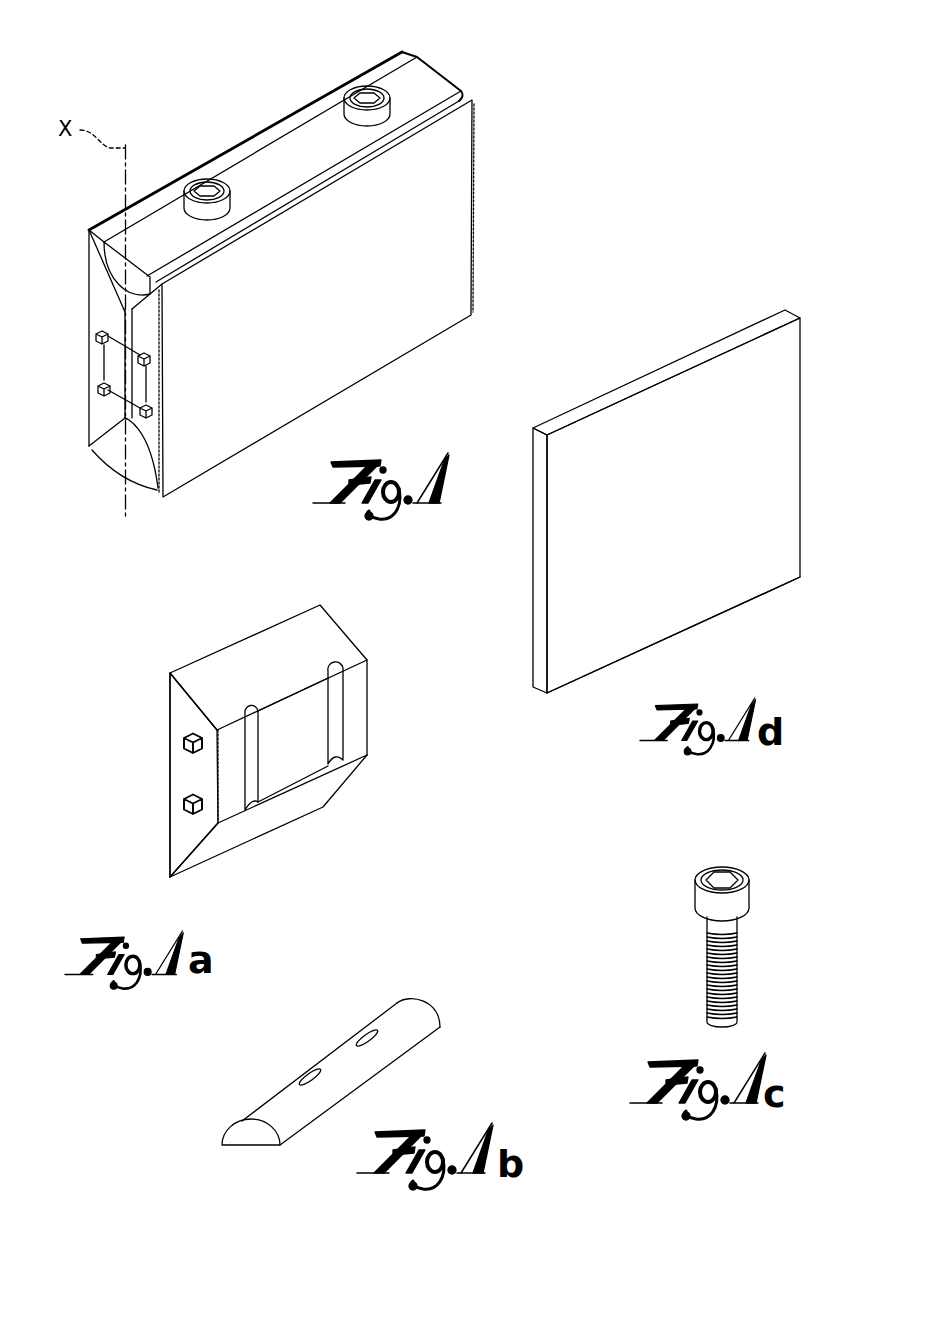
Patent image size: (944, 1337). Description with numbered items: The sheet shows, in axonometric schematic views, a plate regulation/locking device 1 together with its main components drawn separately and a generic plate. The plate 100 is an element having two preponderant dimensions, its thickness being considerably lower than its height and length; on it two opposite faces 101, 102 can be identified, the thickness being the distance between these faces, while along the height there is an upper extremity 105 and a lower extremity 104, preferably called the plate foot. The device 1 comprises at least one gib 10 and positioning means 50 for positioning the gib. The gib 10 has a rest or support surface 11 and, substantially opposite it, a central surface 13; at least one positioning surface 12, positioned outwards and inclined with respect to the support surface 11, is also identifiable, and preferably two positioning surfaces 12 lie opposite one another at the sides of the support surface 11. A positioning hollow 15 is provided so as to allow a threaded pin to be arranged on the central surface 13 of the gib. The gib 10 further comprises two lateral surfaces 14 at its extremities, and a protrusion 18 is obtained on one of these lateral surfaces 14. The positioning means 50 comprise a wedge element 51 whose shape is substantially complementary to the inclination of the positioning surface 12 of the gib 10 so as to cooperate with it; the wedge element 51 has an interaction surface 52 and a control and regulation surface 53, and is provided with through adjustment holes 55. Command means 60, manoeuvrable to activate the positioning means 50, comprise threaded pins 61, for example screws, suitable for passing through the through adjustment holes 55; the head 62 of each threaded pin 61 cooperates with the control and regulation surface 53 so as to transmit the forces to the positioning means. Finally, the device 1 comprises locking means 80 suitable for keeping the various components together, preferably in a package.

In FIG. 1, the plate regulation/locking device 1 is at (342, 289).
In FIG. 1, the gib 10 is at (478, 155).
In FIG. 1A, the gib 10 is at (262, 735).
In FIG. 1A, the rest surface 11 is at (150, 793).
In FIG. 1A, the positioning surface 12 is at (278, 660).
In FIG. 1A, the central surface 13 is at (228, 768).
In FIG. 1A, the lateral surface 14 is at (183, 830).
In FIG. 1A, the positioning hollow 15 is at (350, 720).
In FIG. 1A, the protrusion 18 is at (173, 730).
In FIG. 1, the positioning means 50 is at (446, 63).
In FIG. 1B, the wedge element 51 is at (343, 1076).
In FIG. 1B, the interaction surface 52 is at (343, 1062).
In FIG. 1B, the control and regulation surface 53 is at (260, 1153).
In FIG. 1B, the through adjustment hole 55 is at (305, 1072).
In FIG. 1, the command means 60 is at (223, 175).
In FIG. 1C, the command means 60 is at (713, 924).
In FIG. 1C, the threaded pin 61 is at (757, 888).
In FIG. 1C, the head 62 is at (732, 905).
In FIG. 1, the locking means 80 is at (152, 420).
In FIG. 1D, the plate 100 is at (621, 505).
In FIG. 1D, the face 101 is at (722, 580).
In FIG. 1D, the face 102 is at (532, 563).
In FIG. 1D, the lower extremity 104 is at (597, 677).
In FIG. 1D, the upper extremity 105 is at (549, 425).